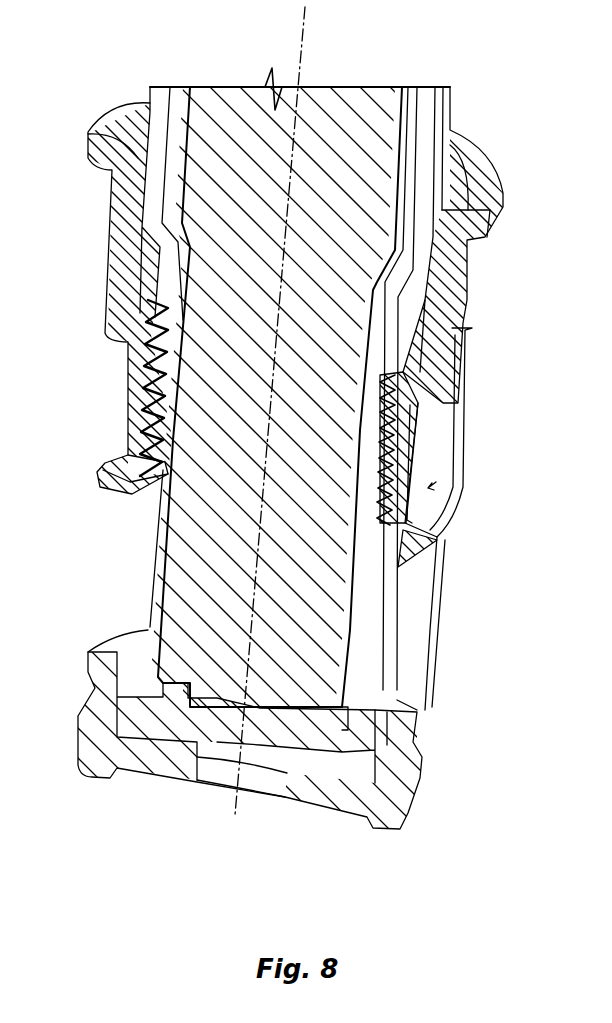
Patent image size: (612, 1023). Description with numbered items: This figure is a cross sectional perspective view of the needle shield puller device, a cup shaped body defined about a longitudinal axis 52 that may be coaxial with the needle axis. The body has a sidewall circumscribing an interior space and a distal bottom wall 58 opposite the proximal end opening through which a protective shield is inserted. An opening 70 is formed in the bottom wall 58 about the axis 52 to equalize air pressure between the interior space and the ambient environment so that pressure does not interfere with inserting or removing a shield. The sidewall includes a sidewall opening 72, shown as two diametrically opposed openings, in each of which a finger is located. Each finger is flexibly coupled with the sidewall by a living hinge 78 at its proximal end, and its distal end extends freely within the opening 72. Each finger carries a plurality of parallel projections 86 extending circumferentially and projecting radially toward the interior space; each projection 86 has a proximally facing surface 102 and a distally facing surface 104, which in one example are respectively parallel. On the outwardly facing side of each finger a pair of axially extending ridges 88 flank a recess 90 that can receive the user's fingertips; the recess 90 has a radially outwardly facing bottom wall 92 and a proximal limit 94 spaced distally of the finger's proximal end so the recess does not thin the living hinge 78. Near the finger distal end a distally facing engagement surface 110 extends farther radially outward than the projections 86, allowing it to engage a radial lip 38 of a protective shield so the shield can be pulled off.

The longitudinal axis 52 is at (305, 36).
The projection 86 is at (176, 384).
The proximally facing surface 102 is at (182, 338).
The distally facing surface 104 is at (385, 440).
The proximal limit 94 is at (115, 342).
The bottom wall 92 is at (127, 408).
The distally facing engagement surface 110 is at (142, 498).
The living hinge 78 is at (445, 297).
The ridge 88 is at (442, 428).
The recess 90 is at (436, 487).
The sidewall opening 72 is at (425, 605).
The distal bottom wall 58 is at (313, 797).
The opening 70 is at (260, 770).
The projecting radial lip 38 is at (397, 700).